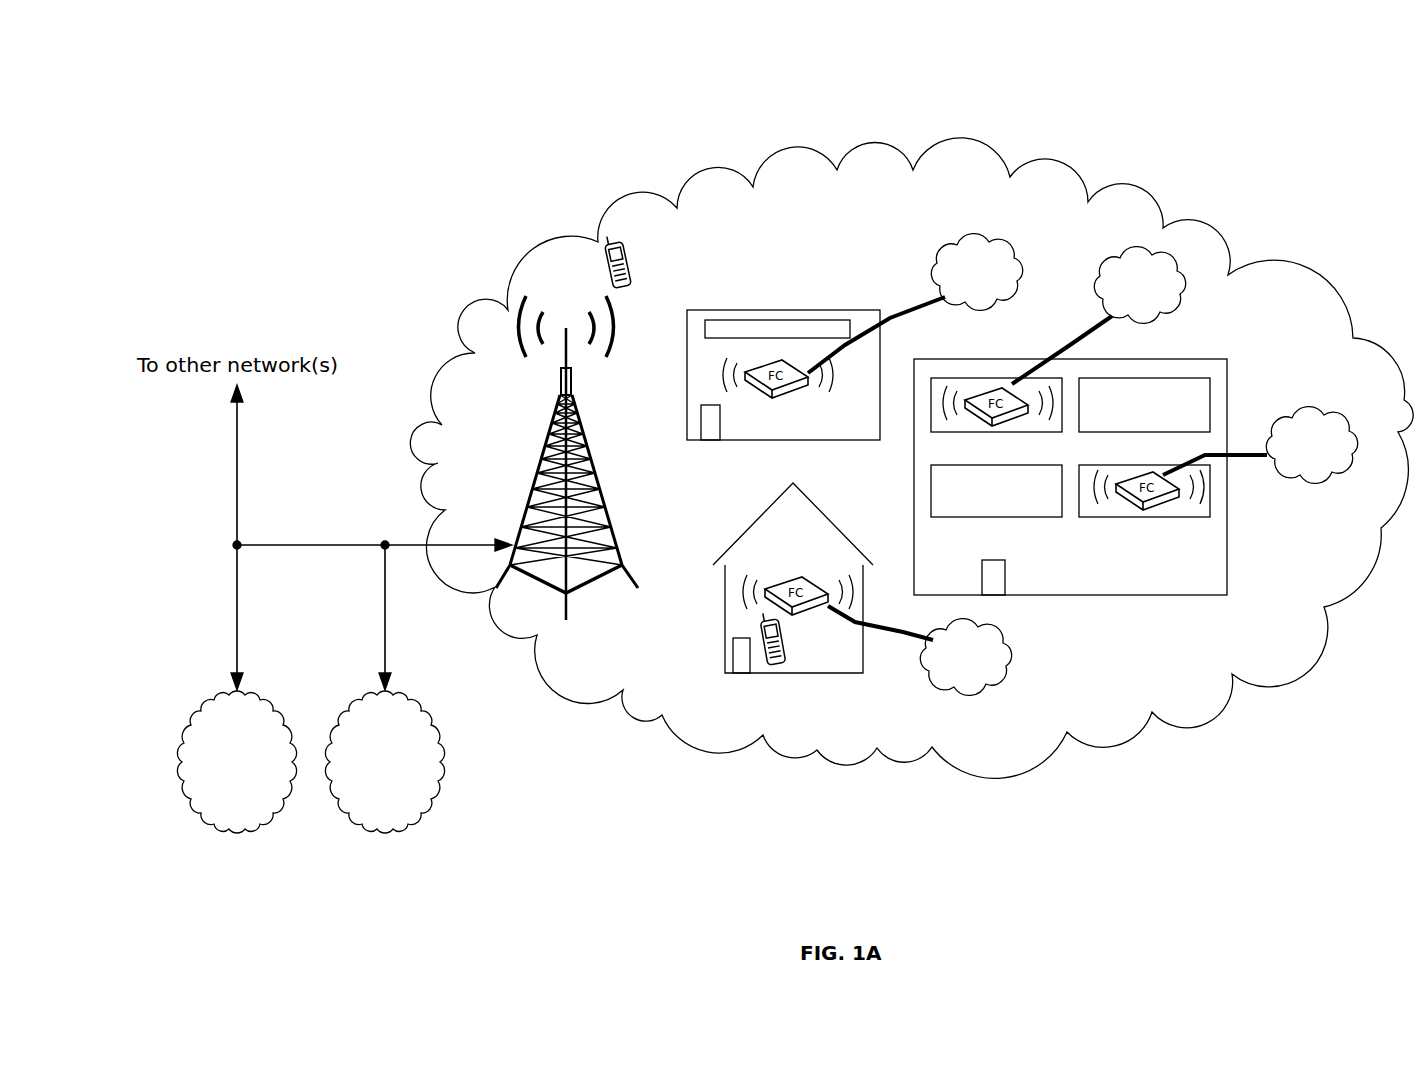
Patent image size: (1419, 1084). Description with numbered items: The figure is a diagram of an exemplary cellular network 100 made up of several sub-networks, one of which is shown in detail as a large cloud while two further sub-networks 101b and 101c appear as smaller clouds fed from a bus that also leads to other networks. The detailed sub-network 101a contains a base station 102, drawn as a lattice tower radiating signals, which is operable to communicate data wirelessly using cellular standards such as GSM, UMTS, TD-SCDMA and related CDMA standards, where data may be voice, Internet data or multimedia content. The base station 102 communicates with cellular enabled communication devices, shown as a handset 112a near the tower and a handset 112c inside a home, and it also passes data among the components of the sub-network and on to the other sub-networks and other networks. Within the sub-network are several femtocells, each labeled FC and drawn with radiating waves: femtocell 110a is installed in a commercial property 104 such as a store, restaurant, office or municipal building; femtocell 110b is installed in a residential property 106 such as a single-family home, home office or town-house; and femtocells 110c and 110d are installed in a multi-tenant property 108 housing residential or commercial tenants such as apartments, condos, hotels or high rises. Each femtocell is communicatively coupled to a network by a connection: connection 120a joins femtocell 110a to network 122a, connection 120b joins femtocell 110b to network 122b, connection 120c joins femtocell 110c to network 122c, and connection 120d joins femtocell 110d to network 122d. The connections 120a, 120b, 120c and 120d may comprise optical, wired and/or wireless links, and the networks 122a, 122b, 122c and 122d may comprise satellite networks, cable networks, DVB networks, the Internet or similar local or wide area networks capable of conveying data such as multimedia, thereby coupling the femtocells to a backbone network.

The cellular network 100 is at (203, 103).
The sub-network 101a is at (712, 166).
The sub-network 101b is at (264, 831).
The sub-network 101c is at (310, 543).
The base station 102 is at (586, 422).
The commercial property 104 is at (720, 311).
The residential property 106 is at (756, 514).
The multi-tenant property 108 is at (1228, 397).
The femtocell 110a is at (770, 393).
The femtocell 110b is at (800, 610).
The femtocell 110c is at (1010, 412).
The femtocell 110d is at (1160, 500).
The cellular enabled communication device 112a is at (630, 257).
The cellular enabled communication device 112c is at (776, 668).
The connection 120a is at (925, 304).
The connection 120b is at (905, 636).
The connection 120c is at (1090, 326).
The connection 120d is at (1236, 459).
The network 122a is at (972, 238).
The network 122b is at (950, 694).
The network 122c is at (1103, 256).
The network 122d is at (1325, 485).